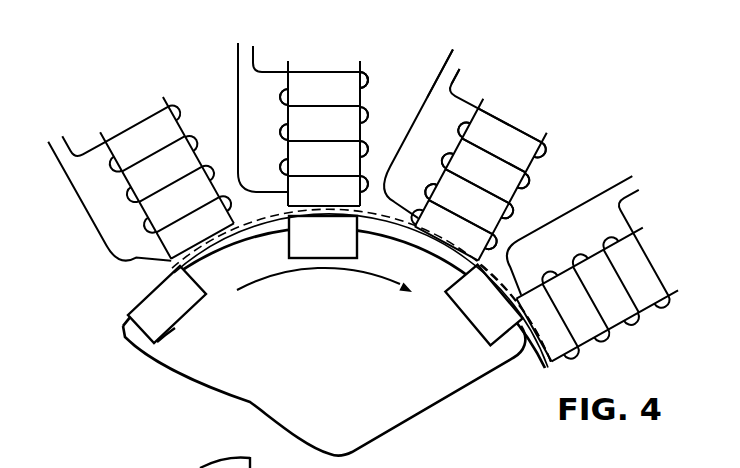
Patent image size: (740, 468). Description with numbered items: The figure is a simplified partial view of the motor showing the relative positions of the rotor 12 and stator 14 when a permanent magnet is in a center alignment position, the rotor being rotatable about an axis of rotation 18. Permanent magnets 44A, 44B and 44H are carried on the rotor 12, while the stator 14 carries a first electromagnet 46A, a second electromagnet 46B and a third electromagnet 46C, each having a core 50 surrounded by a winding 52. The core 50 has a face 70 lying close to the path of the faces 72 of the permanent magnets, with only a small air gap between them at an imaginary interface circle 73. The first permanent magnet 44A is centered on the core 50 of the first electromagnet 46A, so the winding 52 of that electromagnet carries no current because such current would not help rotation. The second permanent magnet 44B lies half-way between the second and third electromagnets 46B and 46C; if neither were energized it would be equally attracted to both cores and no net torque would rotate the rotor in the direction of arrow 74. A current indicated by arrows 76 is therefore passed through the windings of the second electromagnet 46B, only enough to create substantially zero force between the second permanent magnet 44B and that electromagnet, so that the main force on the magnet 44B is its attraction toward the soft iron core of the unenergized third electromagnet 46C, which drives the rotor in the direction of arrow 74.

The rotor 12 is at (295, 336).
The stator 14 is at (79, 240).
The axis of rotation 18 is at (330, 451).
The first permanent magnet 44A is at (289, 232).
The second permanent magnet 44B is at (457, 306).
The permanent magnet 44H is at (166, 328).
The first electromagnet 46A is at (336, 38).
The second electromagnet 46B is at (536, 95).
The third electromagnet 46C is at (657, 240).
The core 50 is at (361, 63).
The winding 52 is at (366, 84).
The core face 70 is at (296, 208).
The permanent magnet faces 72 is at (360, 215).
The imaginary interface circle 73 is at (494, 266).
The arrow 74 is at (348, 272).
The current arrows 76 is at (463, 36).